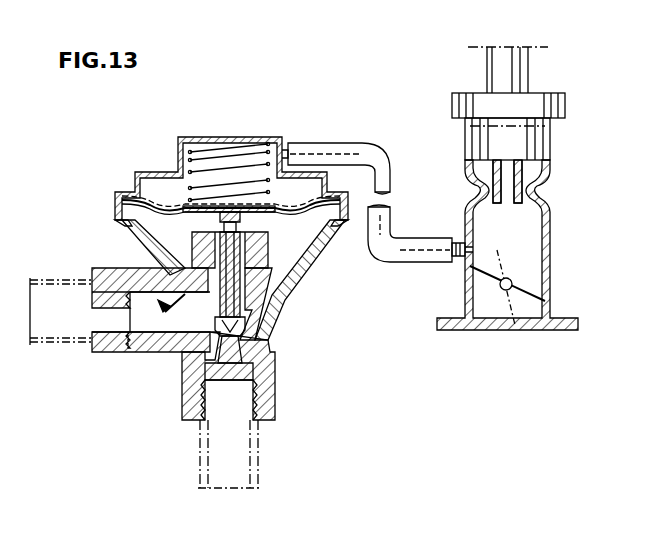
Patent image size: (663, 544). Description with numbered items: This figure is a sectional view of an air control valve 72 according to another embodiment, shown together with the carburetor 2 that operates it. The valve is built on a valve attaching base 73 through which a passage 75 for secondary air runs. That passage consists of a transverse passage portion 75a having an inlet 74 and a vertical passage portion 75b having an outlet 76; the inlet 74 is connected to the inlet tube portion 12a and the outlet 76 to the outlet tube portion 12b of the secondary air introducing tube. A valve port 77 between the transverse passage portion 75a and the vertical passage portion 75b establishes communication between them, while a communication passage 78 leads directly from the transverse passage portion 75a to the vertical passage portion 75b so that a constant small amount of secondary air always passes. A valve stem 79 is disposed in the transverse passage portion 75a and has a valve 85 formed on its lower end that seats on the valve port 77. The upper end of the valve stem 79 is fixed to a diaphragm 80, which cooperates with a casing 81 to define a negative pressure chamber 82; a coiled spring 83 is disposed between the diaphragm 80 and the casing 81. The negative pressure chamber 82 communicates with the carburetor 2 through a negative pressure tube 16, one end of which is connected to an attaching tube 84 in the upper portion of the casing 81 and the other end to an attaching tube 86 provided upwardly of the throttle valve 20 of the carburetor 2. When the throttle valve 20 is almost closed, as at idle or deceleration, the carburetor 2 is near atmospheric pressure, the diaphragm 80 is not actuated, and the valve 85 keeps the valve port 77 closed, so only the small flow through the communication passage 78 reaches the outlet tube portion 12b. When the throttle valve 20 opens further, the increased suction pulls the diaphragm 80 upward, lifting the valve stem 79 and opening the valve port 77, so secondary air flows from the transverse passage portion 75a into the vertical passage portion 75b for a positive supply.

The carburetor 2 is at (492, 203).
The inlet tube portion 12a is at (73, 336).
The outlet tube portion 12b is at (203, 438).
The negative pressure tube 16 is at (374, 143).
The throttle valve 20 is at (533, 303).
The air control valve 72 is at (118, 193).
The valve attaching base 73 is at (272, 333).
The inlet 74 is at (90, 300).
The passage 75 is at (135, 262).
The transverse passage portion 75a is at (152, 318).
The vertical passage portion 75b is at (242, 373).
The outlet 76 is at (232, 420).
The valve port 77 is at (232, 351).
The communication passage 78 is at (195, 365).
The valve stem 79 is at (228, 272).
The diaphragm 80 is at (190, 205).
The casing 81 is at (207, 140).
The negative pressure chamber 82 is at (250, 157).
The coiled spring 83 is at (224, 165).
The attaching tube 84 is at (292, 143).
The valve 85 is at (245, 328).
The attaching tube 86 is at (460, 252).